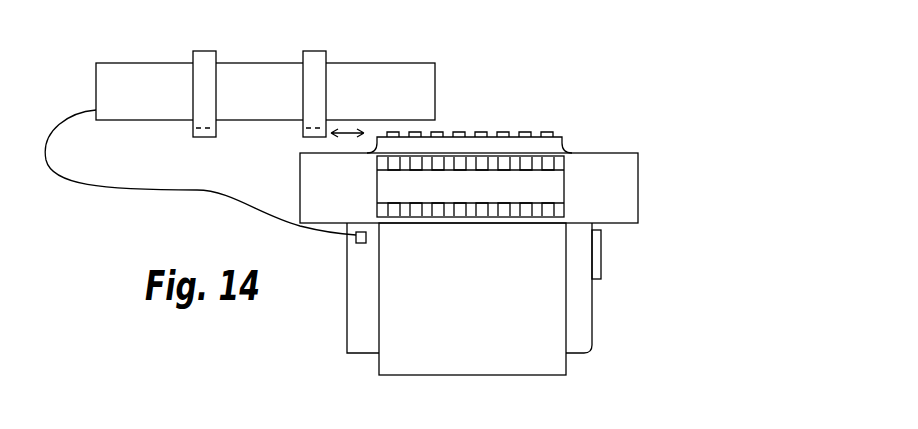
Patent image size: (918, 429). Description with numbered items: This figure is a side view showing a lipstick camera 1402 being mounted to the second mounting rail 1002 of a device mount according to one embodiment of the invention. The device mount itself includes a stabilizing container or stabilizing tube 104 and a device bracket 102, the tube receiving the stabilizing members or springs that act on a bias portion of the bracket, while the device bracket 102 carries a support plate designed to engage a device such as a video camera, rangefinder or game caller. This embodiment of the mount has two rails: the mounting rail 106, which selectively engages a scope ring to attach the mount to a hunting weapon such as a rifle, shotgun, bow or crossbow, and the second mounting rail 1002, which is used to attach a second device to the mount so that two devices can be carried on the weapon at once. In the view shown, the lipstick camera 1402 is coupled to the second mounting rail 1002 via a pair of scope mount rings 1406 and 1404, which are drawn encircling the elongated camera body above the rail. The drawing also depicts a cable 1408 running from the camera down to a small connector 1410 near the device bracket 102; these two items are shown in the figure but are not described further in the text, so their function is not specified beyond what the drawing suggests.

The lipstick camera 1402 is at (279, 104).
The scope mount ring 1404 is at (314, 51).
The scope mount ring 1406 is at (204, 51).
The cable 1408 is at (145, 121).
The connector 1410 is at (356, 243).
The second mounting rail 1002 is at (522, 132).
The mounting rail 106 is at (558, 180).
The stabilizing tube 104 is at (620, 165).
The device bracket 102 is at (552, 363).